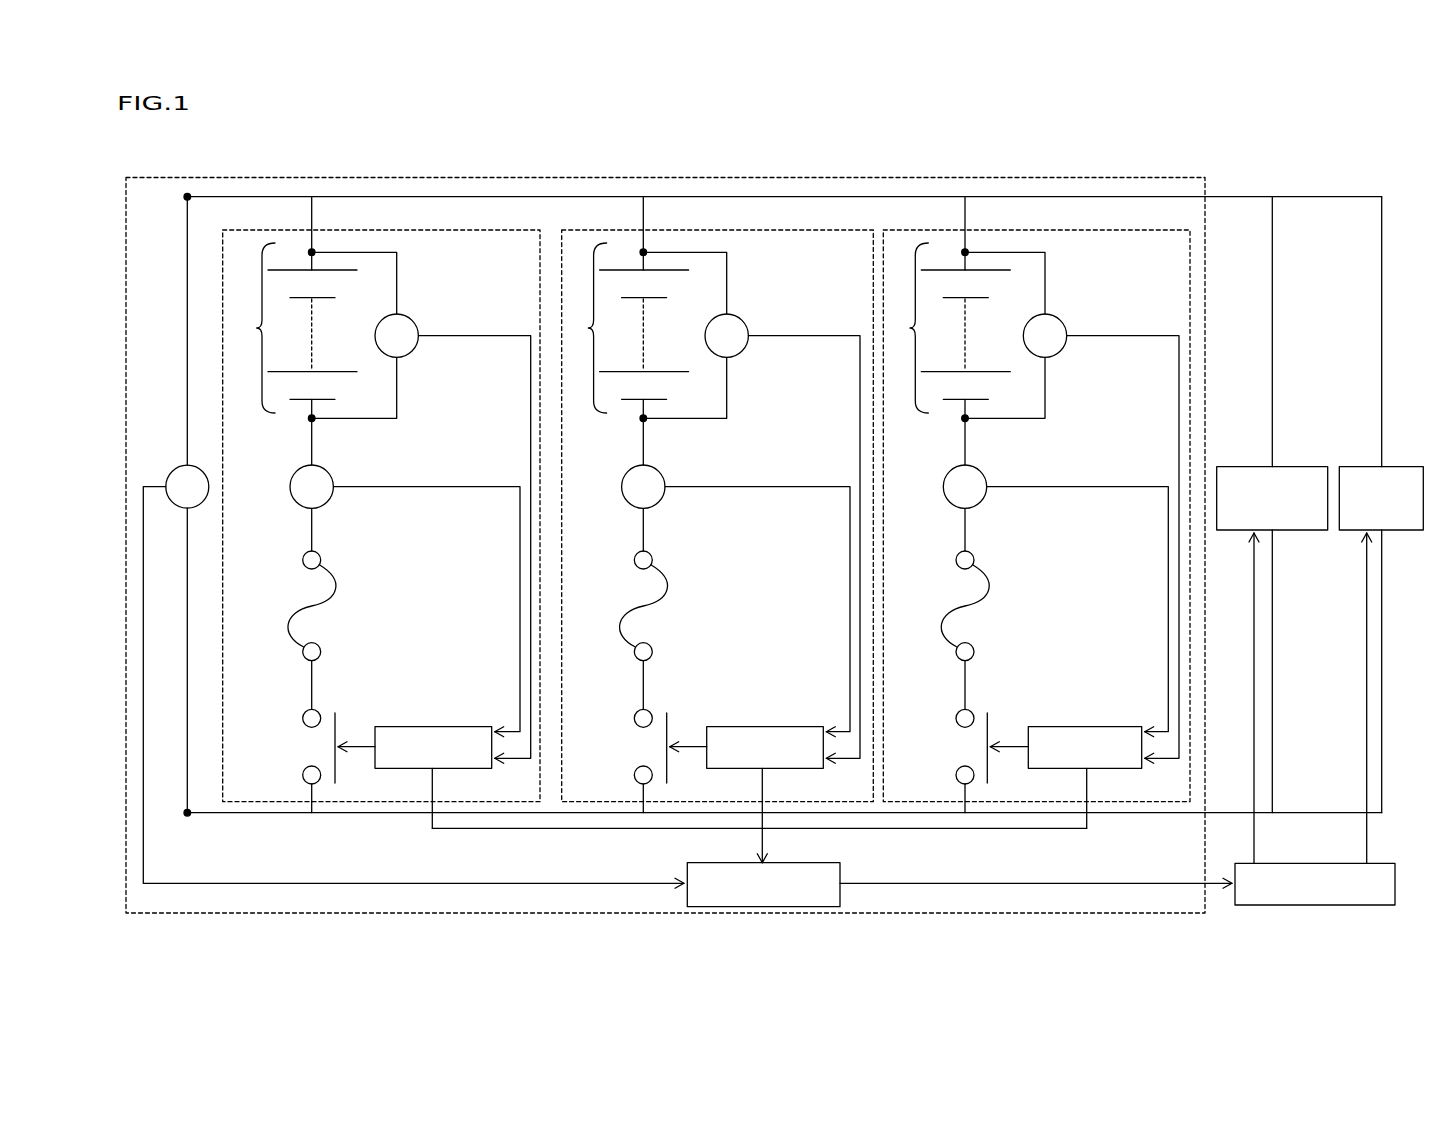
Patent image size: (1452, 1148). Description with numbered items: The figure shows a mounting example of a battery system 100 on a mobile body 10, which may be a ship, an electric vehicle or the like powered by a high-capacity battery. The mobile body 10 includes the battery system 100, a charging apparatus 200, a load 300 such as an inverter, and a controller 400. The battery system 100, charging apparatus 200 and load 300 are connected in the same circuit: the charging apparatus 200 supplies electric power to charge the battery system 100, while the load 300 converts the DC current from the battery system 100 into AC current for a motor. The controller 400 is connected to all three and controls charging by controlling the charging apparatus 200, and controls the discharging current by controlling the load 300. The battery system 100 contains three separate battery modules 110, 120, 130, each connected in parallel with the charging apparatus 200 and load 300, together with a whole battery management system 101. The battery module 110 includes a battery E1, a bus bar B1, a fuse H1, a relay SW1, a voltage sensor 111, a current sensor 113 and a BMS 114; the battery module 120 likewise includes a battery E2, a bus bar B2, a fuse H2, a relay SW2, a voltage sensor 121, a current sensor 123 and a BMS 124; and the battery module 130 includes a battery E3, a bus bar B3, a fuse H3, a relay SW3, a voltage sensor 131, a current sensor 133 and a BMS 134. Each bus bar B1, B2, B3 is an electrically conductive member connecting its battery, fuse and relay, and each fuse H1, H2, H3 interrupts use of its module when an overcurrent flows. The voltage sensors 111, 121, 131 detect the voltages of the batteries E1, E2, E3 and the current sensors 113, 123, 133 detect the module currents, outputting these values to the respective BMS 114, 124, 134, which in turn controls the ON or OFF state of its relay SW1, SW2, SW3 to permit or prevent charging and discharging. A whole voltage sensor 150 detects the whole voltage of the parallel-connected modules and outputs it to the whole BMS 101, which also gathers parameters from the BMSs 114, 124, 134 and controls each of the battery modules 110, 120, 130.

The mobile body 10 is at (152, 151).
The battery system 100 is at (1150, 177).
The whole battery management system 101 is at (787, 863).
The battery module 110 is at (478, 228).
The voltage sensor 111 is at (412, 318).
The current sensor 113 is at (337, 472).
The BMS 114 is at (443, 725).
The battery module 120 is at (811, 228).
The voltage sensor 121 is at (742, 318).
The current sensor 123 is at (668, 472).
The BMS 124 is at (773, 725).
The battery module 130 is at (1128, 228).
The voltage sensor 131 is at (1060, 318).
The current sensor 133 is at (990, 472).
The BMS 134 is at (1098, 725).
The whole voltage sensor 150 is at (168, 466).
The charging apparatus 200 is at (1285, 465).
The load 300 is at (1397, 465).
The controller 400 is at (1380, 862).
The battery E1 is at (294, 328).
The battery E2 is at (625, 328).
The battery E3 is at (947, 328).
The bus bar B1 is at (311, 538).
The bus bar B2 is at (642, 538).
The bus bar B3 is at (964, 538).
The fuse H1 is at (337, 568).
The fuse H2 is at (668, 568).
The fuse H3 is at (990, 568).
The relay SW1 is at (338, 725).
The relay SW2 is at (670, 725).
The relay SW3 is at (990, 725).